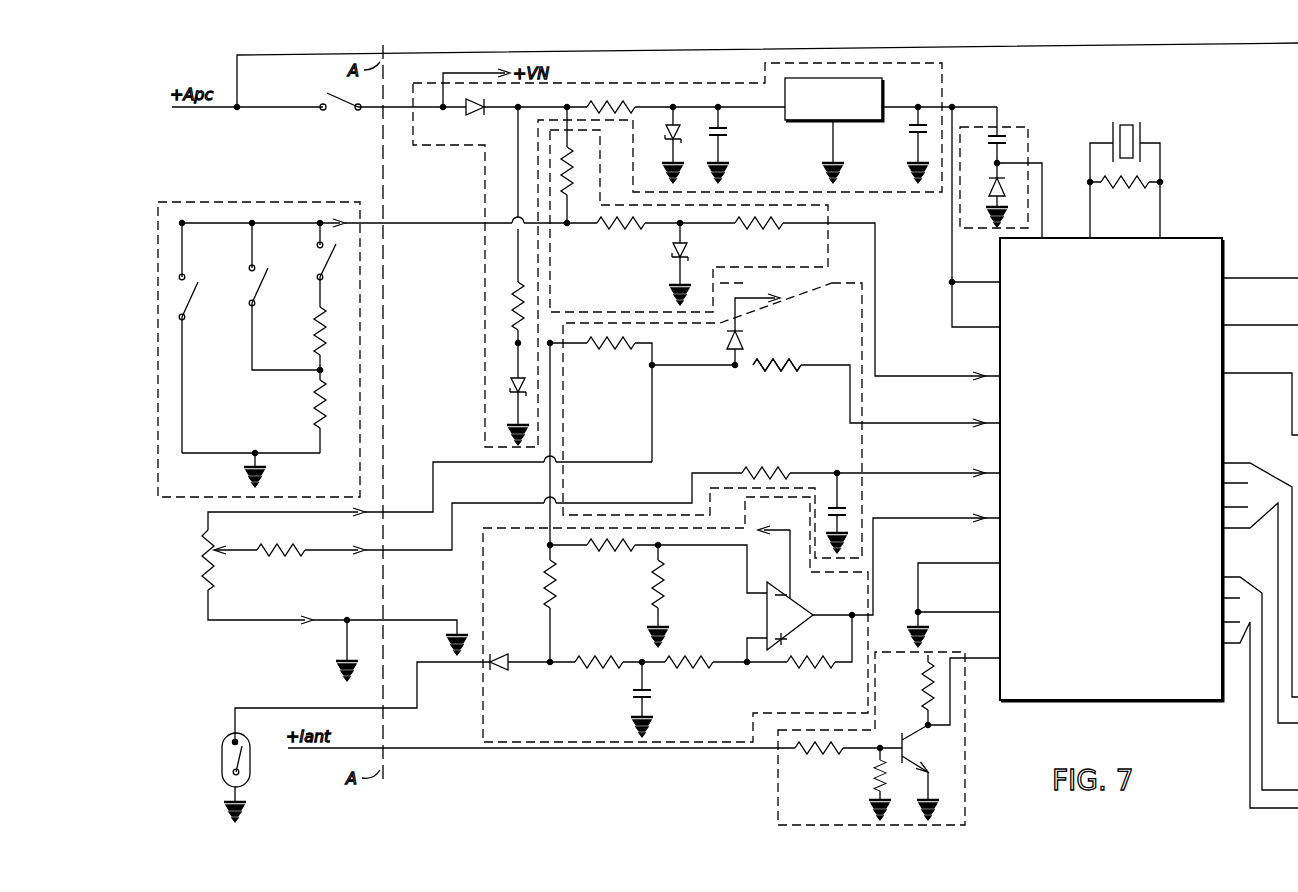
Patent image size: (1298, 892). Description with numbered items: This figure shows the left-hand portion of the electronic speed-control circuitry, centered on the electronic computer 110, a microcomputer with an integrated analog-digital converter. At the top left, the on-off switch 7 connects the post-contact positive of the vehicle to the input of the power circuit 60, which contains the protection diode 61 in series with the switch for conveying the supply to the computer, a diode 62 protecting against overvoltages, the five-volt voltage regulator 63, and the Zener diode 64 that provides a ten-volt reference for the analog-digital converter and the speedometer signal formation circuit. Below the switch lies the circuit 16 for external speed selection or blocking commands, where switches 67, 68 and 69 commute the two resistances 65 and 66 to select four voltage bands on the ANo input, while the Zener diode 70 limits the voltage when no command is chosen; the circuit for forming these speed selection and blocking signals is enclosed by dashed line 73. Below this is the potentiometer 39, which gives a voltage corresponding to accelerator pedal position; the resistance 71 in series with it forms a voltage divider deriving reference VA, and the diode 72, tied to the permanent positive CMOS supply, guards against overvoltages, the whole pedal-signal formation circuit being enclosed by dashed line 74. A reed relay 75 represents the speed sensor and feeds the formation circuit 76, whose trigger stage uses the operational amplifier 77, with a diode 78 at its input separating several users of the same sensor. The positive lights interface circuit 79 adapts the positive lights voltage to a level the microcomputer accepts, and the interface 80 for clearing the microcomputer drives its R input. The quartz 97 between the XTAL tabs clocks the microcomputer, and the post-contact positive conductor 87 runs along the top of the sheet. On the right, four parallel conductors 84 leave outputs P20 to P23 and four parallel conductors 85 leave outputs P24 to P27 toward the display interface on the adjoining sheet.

The on-off switch 7 is at (338, 112).
The circuit for external speed selection or blocking commands 16 is at (259, 349).
The potentiometer 39 is at (212, 576).
The power circuit 60 is at (930, 74).
The protection diode 61 is at (484, 112).
The diode 62 is at (670, 136).
The voltage regulator 63 is at (818, 108).
The Zener diode 64 is at (512, 398).
The resistance 65 is at (314, 325).
The resistance 66 is at (314, 396).
The switch 67 is at (199, 338).
The switch 68 is at (284, 296).
The switch 69 is at (333, 265).
The Zener diode 70 is at (673, 252).
The resistance 71 is at (795, 370).
The diode 72 is at (744, 336).
The circuit for forming speed selection and blocking signals 73 is at (775, 255).
The circuit for formation of the accelerator pedal position signal 74 is at (840, 437).
The reed relay 75 is at (249, 768).
The formation circuit 76 is at (617, 542).
The operational amplifier 77 is at (792, 607).
The diode 78 is at (503, 655).
The positive lights interface circuit 79 is at (956, 752).
The interface for clearing the microcomputer 80 is at (1022, 134).
The parallel conductors 84 is at (1286, 560).
The parallel conductors 85 is at (1250, 752).
The conductor 87 is at (1066, 47).
The quartz 97 is at (1132, 118).
The electronic computer 110 is at (1116, 471).